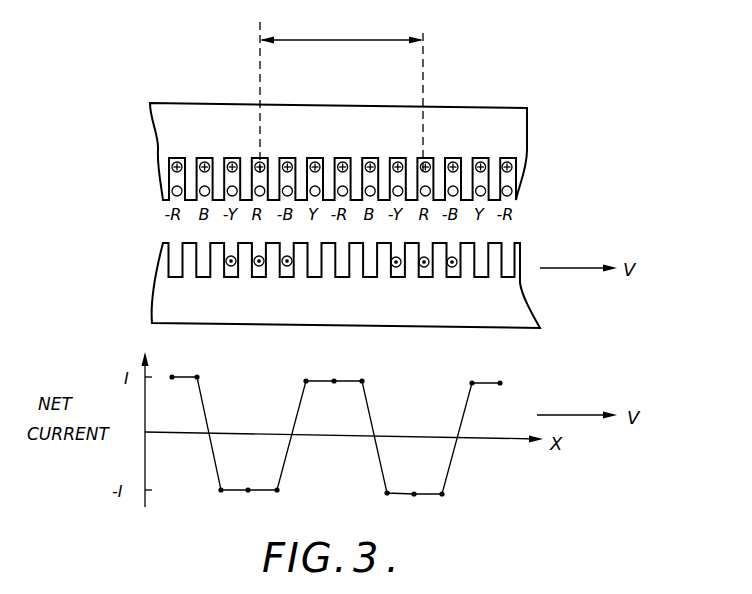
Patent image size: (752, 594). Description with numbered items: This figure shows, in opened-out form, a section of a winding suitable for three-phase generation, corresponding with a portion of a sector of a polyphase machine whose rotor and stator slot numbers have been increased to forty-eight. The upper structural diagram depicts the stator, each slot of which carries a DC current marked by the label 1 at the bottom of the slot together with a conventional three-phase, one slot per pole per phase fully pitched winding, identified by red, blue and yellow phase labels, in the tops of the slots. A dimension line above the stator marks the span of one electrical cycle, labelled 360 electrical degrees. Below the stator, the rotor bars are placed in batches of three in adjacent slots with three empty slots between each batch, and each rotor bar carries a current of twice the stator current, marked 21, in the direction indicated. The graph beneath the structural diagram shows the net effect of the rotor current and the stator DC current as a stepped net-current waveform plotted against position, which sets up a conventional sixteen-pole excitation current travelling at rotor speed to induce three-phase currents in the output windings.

The stator slot conductors carrying current I 1 is at (342, 165).
The rotor slot conductors carrying current 2I 21 is at (338, 276).
The 360 degree electrical span 360 is at (341, 92).